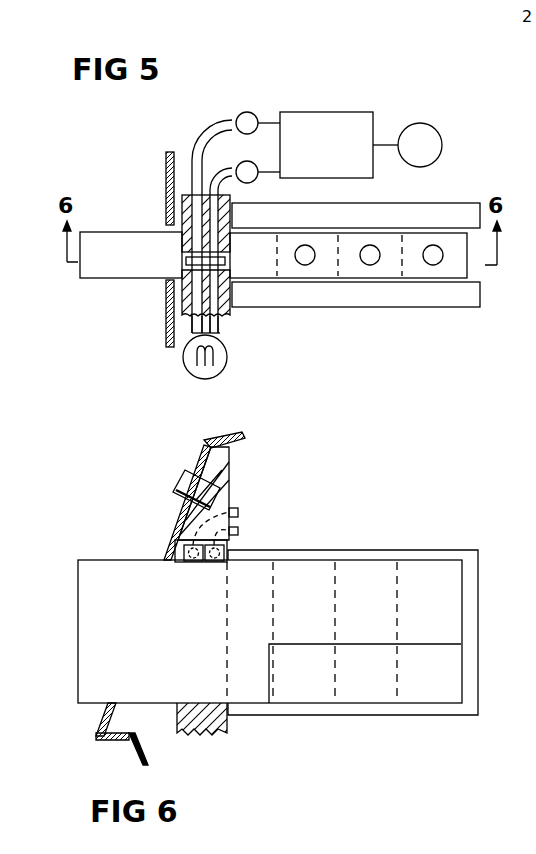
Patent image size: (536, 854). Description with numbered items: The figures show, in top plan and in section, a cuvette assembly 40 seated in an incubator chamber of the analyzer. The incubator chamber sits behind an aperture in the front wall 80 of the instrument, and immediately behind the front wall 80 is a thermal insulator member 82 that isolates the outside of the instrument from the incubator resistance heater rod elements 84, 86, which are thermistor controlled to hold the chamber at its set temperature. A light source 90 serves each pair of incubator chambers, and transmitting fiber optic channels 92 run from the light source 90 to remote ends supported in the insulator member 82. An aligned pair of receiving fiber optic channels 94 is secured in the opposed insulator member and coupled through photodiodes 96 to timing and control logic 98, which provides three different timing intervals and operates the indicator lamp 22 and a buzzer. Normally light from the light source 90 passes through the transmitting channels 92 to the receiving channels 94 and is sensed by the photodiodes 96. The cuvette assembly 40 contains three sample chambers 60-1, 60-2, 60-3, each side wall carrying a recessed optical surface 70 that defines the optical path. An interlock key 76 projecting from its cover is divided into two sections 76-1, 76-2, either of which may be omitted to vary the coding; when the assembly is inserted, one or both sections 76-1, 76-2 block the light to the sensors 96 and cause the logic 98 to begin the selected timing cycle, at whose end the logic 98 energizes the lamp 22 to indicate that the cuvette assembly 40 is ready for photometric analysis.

In FIG. 5, the indicator lamp 22 is at (417, 124).
In FIG. 6, the indicator lamp 22 is at (177, 478).
In FIG. 5, the cuvette assembly 40 is at (106, 285).
In FIG. 6, the cuvette assembly 40 is at (96, 555).
In FIG. 6, the sample chamber 60-1 is at (432, 595).
In FIG. 6, the sample chamber 60-2 is at (377, 587).
In FIG. 6, the sample chamber 60-3 is at (320, 580).
In FIG. 6, the optical surface 70 is at (298, 687).
In FIG. 5, the interlock key 76 is at (186, 261).
In FIG. 6, the interlock key section 76-1 is at (185, 563).
In FIG. 6, the interlock key section 76-2 is at (207, 563).
In FIG. 5, the front wall 80 is at (166, 178).
In FIG. 6, the front wall 80 is at (176, 528).
In FIG. 5, the thermal insulator member 82 is at (231, 315).
In FIG. 6, the thermal insulator member 82 is at (213, 735).
In FIG. 5, the incubator resistance heater rod element 84 is at (367, 203).
In FIG. 6, the incubator resistance heater rod element 84 is at (285, 550).
In FIG. 5, the incubator resistance heater rod element 86 is at (357, 307).
In FIG. 5, the light source 90 is at (227, 368).
In FIG. 5, the transmitting fiber optic channels 92 is at (190, 326).
In FIG. 5, the receiving fiber optic channels 94 is at (204, 126).
In FIG. 6, the receiving fiber optic channels 94 is at (237, 512).
In FIG. 5, the photodiodes 96 is at (250, 112).
In FIG. 5, the timing and control logic 98 is at (326, 112).